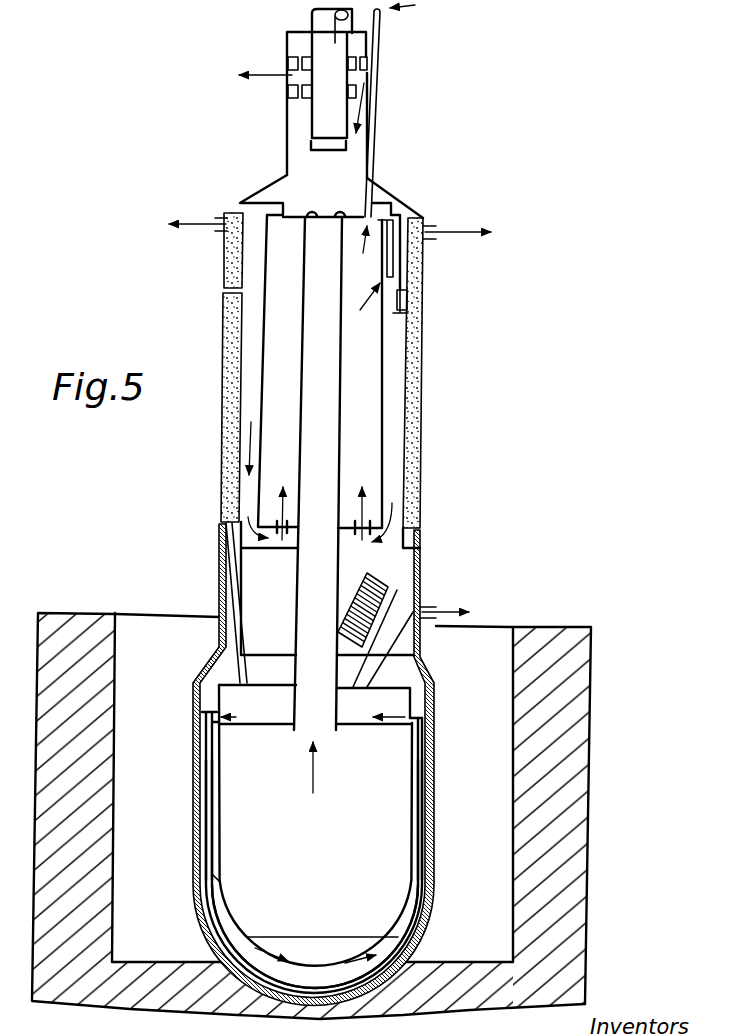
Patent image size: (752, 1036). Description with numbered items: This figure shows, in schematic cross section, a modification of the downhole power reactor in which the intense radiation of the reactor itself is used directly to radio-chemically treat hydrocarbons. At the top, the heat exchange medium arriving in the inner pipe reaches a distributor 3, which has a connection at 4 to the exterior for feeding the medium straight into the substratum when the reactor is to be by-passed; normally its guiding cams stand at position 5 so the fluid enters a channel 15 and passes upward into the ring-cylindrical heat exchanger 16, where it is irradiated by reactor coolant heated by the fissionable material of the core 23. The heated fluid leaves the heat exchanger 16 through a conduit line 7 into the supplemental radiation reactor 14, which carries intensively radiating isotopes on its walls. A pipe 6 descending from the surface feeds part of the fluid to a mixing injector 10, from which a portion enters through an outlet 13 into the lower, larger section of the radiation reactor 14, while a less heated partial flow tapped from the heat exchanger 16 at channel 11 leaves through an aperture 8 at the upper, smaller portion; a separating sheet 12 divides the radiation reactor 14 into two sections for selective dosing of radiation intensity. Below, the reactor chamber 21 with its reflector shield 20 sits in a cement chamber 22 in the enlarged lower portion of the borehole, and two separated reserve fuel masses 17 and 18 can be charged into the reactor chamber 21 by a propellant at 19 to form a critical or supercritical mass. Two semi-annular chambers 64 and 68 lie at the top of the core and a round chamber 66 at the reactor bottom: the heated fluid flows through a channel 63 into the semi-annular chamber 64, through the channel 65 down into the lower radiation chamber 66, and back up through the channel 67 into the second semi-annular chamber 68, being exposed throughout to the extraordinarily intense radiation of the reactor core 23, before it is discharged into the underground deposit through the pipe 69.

The distributor 3 is at (290, 62).
The connection to exterior 4 is at (266, 78).
The position of guiding cams 5 is at (362, 110).
The pipe 6 is at (378, 76).
The conduit line 7 is at (310, 122).
The aperture 8 is at (193, 228).
The mixing injector 10 is at (381, 203).
The channel 11 is at (403, 273).
The separating sheet 12 is at (408, 293).
The outlet 13 is at (405, 313).
The radiation reactor 14 is at (405, 360).
The channel 15 is at (388, 425).
The heat exchanger 16 is at (282, 342).
The reserve fuel mass 17 is at (367, 607).
The reserve fuel mass 18 is at (345, 625).
The propellant 19 is at (405, 588).
The reflector shield 20 is at (135, 623).
The reactor chamber 21 is at (383, 752).
The chamber 22 is at (552, 790).
The reactor core 23 is at (363, 888).
The channel 63 is at (237, 590).
The semi-annular chamber 64 is at (277, 716).
The channel 65 is at (210, 815).
The round chamber 66 is at (325, 948).
The channel 67 is at (416, 813).
The semi-annular chamber 68 is at (355, 716).
The pipe 69 is at (437, 619).